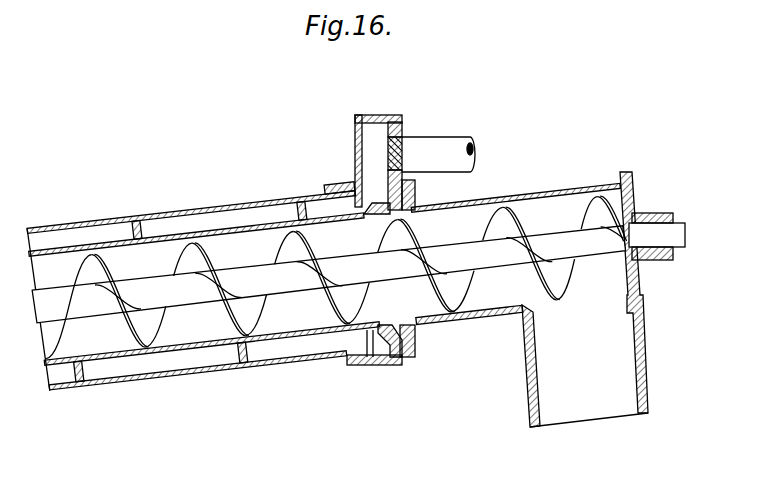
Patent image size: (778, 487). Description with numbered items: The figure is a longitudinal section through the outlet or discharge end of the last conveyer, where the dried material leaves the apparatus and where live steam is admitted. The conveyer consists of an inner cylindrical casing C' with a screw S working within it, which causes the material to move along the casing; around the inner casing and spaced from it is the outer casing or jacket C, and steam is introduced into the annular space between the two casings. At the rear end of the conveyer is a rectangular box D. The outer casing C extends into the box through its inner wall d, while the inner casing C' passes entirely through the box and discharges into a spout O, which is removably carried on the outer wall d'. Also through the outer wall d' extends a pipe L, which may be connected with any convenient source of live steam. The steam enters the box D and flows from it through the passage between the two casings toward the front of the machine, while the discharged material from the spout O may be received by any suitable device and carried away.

The outer casing C is at (214, 287).
The inner cylindrical casing C' is at (337, 289).
The screw S is at (458, 250).
The rectangular box D is at (385, 236).
The inner wall d is at (338, 161).
The outer wall d' is at (413, 142).
The pipe L is at (478, 148).
The spout O is at (523, 367).